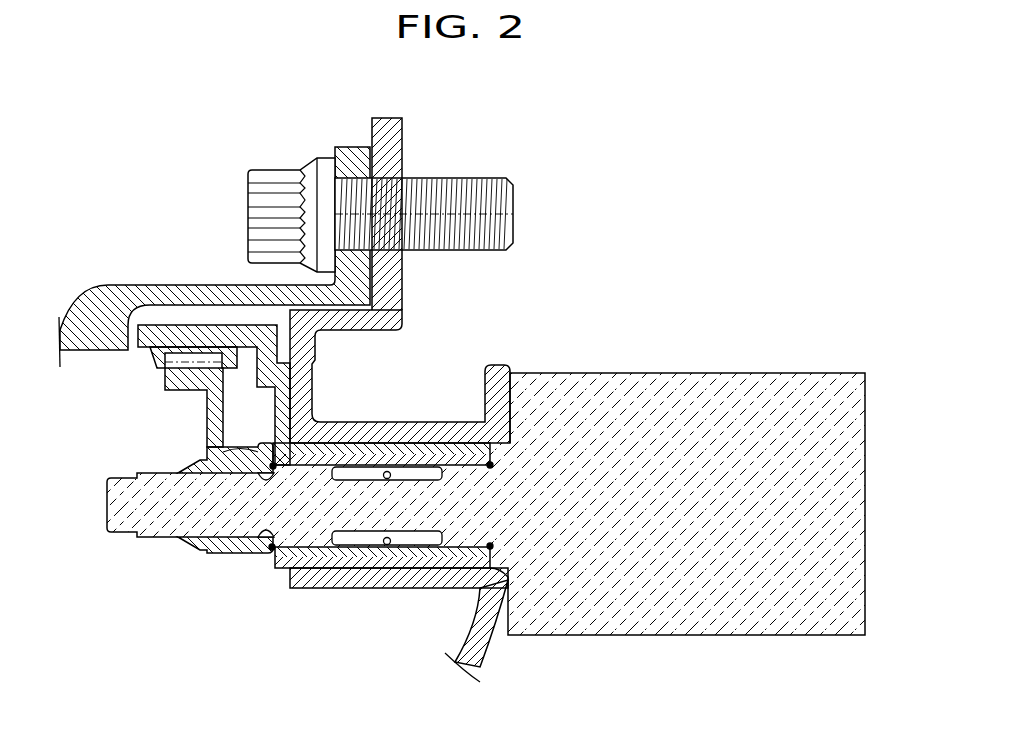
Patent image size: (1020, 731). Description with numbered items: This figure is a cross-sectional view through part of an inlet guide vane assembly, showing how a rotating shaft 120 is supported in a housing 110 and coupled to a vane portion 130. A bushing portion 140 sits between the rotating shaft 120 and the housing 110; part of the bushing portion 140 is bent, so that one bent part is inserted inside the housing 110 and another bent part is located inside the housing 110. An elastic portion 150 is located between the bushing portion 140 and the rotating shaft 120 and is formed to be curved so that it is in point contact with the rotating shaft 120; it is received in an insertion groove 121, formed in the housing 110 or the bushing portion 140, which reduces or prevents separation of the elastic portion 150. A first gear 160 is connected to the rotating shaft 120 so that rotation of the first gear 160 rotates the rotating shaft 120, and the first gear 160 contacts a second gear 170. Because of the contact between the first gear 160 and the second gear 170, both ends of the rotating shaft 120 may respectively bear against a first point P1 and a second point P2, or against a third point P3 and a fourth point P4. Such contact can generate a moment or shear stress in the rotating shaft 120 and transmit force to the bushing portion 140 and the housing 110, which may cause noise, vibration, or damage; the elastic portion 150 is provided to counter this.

The housing 110 is at (388, 118).
The rotating shaft 120 is at (308, 507).
The insertion groove 121 is at (433, 542).
The vane portion 130 is at (733, 373).
The bushing portion 140 is at (423, 447).
The elastic portion 150 is at (393, 540).
The first gear 160 is at (210, 420).
The second gear 170 is at (185, 335).
The first point P1 is at (490, 465).
The second point P2 is at (272, 547).
The third point P3 is at (490, 546).
The fourth point P4 is at (272, 466).